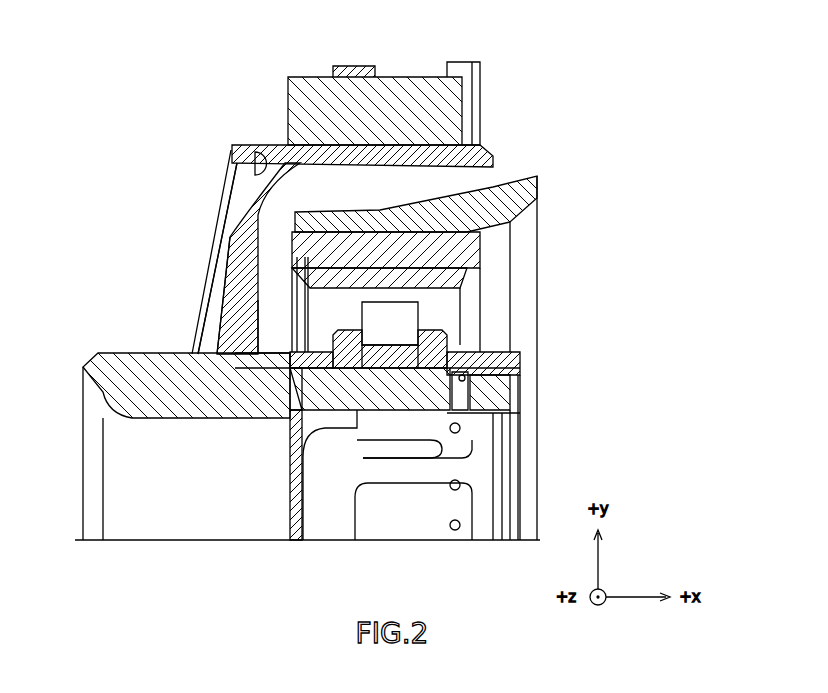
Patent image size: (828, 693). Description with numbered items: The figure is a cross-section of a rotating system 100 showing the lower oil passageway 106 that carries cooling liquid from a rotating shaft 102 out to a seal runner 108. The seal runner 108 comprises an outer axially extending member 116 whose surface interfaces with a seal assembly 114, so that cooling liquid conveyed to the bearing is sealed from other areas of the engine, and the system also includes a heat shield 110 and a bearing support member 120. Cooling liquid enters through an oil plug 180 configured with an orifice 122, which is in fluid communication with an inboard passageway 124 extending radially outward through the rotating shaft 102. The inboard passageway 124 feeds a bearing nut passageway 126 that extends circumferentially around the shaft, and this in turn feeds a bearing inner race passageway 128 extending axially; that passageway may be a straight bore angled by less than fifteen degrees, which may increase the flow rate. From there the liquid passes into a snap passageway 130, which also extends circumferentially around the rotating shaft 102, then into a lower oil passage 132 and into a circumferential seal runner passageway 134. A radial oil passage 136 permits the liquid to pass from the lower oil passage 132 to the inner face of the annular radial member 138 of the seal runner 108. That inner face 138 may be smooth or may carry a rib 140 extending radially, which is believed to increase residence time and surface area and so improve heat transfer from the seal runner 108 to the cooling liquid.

The rotating system 100 is at (493, 47).
The rotating shaft 102 is at (98, 360).
The lower oil passageway 106 is at (418, 420).
The seal runner 108 is at (258, 150).
The heat shield 110 is at (193, 257).
The seal assembly 114 is at (450, 105).
The outer axially extending member 116 is at (508, 250).
The bearing support member 120 is at (520, 182).
The orifice 122 is at (520, 418).
The inboard passageway 124 is at (520, 398).
The bearing nut passageway 126 is at (520, 360).
The bearing inner race passageway 128 is at (380, 372).
The snap passageway 130 is at (332, 375).
The lower oil passage 132 is at (290, 372).
The circumferential seal runner passageway 134 is at (258, 375).
The radial oil passage 136 is at (240, 346).
The inner face of the annular radial member 138 is at (248, 309).
The rib 140 is at (225, 284).
The oil plug 180 is at (290, 493).